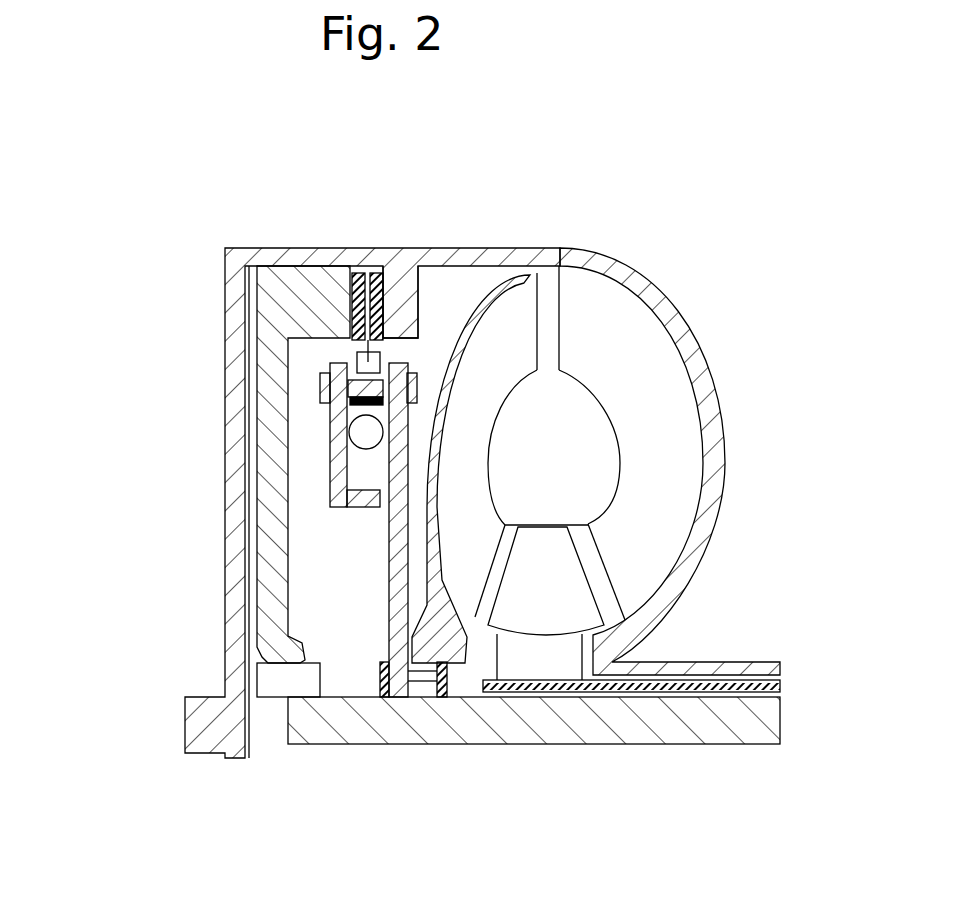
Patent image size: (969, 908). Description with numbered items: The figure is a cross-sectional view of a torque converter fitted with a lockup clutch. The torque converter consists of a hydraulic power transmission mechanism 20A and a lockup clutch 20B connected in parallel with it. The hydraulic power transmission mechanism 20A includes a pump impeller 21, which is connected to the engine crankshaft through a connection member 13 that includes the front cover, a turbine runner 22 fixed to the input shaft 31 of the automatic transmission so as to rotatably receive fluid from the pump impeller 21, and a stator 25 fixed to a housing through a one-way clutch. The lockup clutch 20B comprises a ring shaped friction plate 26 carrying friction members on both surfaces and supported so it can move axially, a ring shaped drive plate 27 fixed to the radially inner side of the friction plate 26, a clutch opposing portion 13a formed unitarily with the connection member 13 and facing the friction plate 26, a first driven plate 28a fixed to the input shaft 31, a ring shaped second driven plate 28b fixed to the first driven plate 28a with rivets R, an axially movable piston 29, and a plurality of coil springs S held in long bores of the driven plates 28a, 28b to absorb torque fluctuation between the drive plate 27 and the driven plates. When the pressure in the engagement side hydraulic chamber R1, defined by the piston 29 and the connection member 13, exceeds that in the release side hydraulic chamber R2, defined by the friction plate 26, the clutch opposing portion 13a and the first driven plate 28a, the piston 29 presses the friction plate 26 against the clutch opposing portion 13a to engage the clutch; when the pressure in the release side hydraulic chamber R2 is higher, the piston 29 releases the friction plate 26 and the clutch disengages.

The connection member 13 is at (230, 338).
The clutch opposing portion 13a is at (433, 266).
The hydraulic power transmission mechanism 20A is at (614, 232).
The lockup clutch 20B is at (311, 234).
The pump impeller 21 is at (640, 311).
The turbine runner 22 is at (532, 298).
The stator 25 is at (550, 525).
The friction plate 26 is at (377, 272).
The drive plate 27 is at (357, 358).
The first driven plate 28a is at (392, 590).
The second driven plate 28b is at (330, 480).
The piston 29 is at (260, 298).
The input shaft 31 is at (678, 733).
The rivets R is at (385, 353).
The engagement side hydraulic chamber R1 is at (250, 552).
The release side hydraulic chamber R2 is at (461, 283).
The coil springs S is at (352, 432).